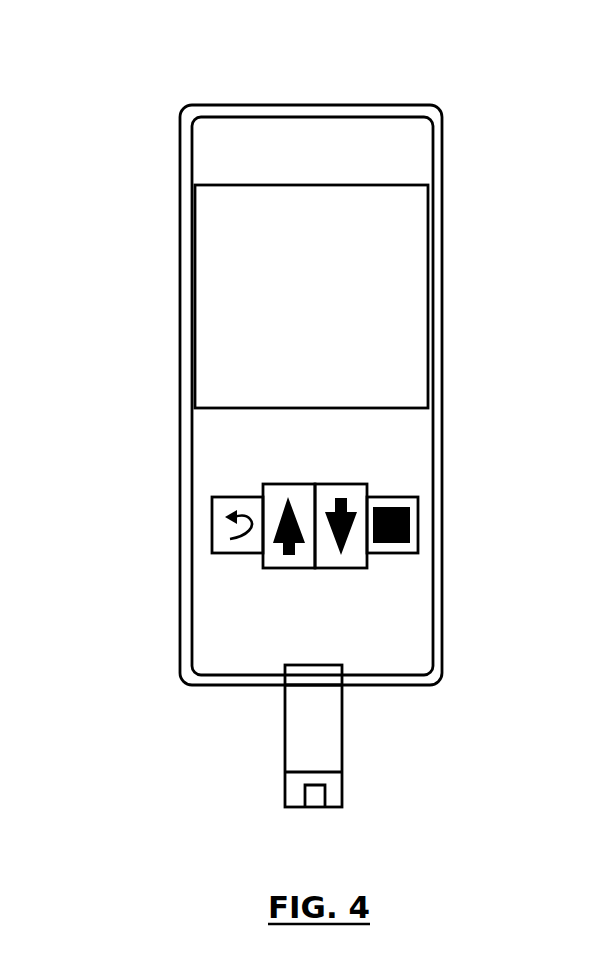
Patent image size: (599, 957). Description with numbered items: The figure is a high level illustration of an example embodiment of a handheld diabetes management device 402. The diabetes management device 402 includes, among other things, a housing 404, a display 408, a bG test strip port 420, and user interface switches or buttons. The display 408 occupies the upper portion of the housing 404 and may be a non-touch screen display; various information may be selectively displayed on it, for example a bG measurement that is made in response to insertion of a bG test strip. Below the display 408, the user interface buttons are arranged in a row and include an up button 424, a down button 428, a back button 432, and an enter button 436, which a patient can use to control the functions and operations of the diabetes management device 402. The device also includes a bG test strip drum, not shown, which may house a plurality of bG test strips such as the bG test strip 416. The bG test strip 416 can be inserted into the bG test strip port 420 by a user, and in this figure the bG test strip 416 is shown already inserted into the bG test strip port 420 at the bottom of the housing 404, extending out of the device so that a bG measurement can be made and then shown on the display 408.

The diabetes management device 402 is at (297, 417).
The housing 404 is at (443, 105).
The display 408 is at (462, 193).
The bG test strip 416 is at (285, 718).
The bG test strip port 420 is at (342, 685).
The up button 424 is at (290, 568).
The down button 428 is at (347, 568).
The back button 432 is at (236, 553).
The enter button 436 is at (397, 553).